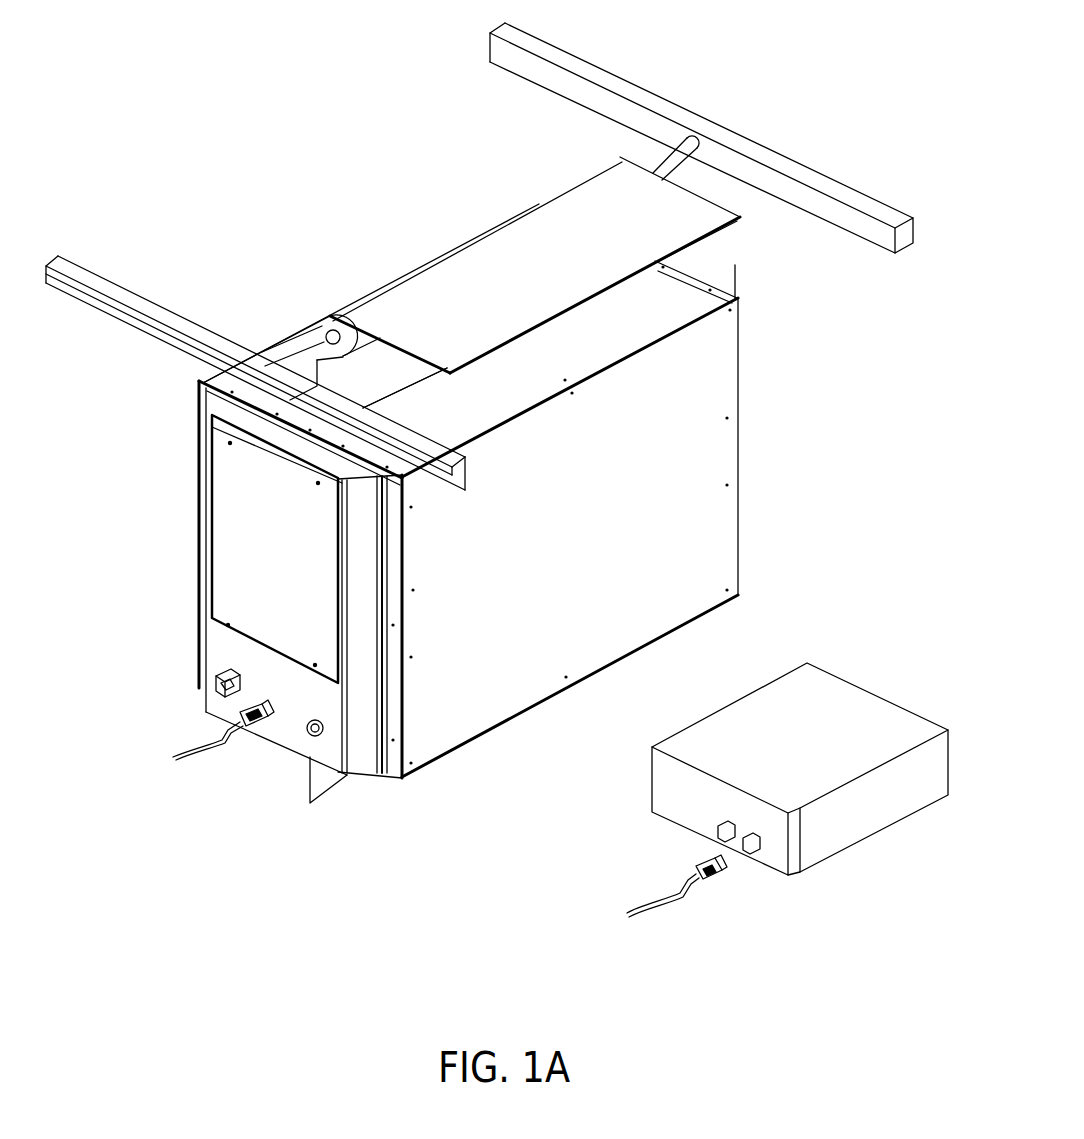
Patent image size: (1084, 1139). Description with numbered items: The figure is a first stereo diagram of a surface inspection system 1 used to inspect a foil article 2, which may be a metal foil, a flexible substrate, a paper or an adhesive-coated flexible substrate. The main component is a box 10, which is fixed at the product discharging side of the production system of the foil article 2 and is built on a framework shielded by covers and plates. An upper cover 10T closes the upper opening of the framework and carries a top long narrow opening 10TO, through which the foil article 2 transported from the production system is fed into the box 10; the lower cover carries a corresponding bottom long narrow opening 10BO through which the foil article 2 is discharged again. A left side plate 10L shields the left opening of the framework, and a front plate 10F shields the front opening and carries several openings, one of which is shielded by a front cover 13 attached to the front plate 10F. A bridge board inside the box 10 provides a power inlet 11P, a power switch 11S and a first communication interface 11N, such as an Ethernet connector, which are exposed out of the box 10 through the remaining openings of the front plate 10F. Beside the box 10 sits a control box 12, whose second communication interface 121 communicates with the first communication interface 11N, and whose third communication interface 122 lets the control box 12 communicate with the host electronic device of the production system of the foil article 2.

The surface inspection system 1 is at (160, 190).
The foil article 2 is at (710, 222).
The box 10 is at (741, 440).
The upper cover 10T is at (607, 347).
The top long narrow opening 10TO is at (423, 380).
The left side plate 10L is at (727, 555).
The front plate 10F is at (215, 653).
The bottom long narrow opening 10BO is at (310, 760).
The front cover 13 is at (217, 515).
The power inlet 11P is at (217, 690).
The first communication interface 11N is at (267, 693).
The power switch 11S is at (323, 732).
The control box 12 is at (877, 688).
The second communication interface 121 is at (760, 847).
The third communication interface 122 is at (717, 820).